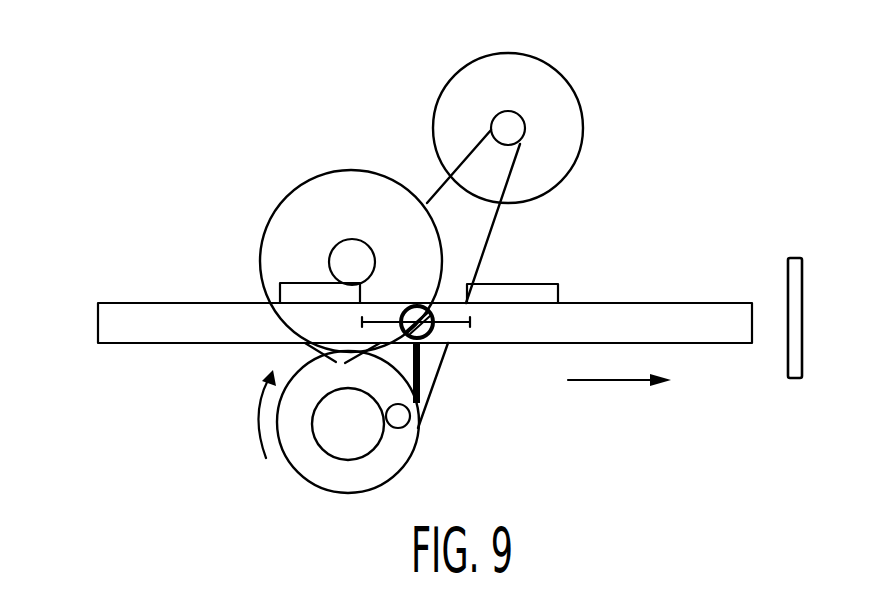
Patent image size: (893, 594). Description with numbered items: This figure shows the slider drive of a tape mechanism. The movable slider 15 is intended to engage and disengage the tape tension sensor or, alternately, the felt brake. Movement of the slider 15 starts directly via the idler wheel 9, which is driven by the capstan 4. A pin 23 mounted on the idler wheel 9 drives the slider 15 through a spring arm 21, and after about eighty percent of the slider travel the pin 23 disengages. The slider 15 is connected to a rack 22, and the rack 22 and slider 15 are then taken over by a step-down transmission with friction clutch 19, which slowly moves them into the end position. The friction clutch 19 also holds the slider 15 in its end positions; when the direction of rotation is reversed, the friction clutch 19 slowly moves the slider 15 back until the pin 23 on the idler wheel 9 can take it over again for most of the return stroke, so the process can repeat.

The capstan 4 is at (573, 132).
The friction clutch 19 is at (288, 198).
The rack 22 is at (280, 283).
The slider 15 is at (620, 303).
The spring arm 21 is at (428, 343).
The pin 23 is at (398, 428).
The idler wheel 9 is at (313, 472).